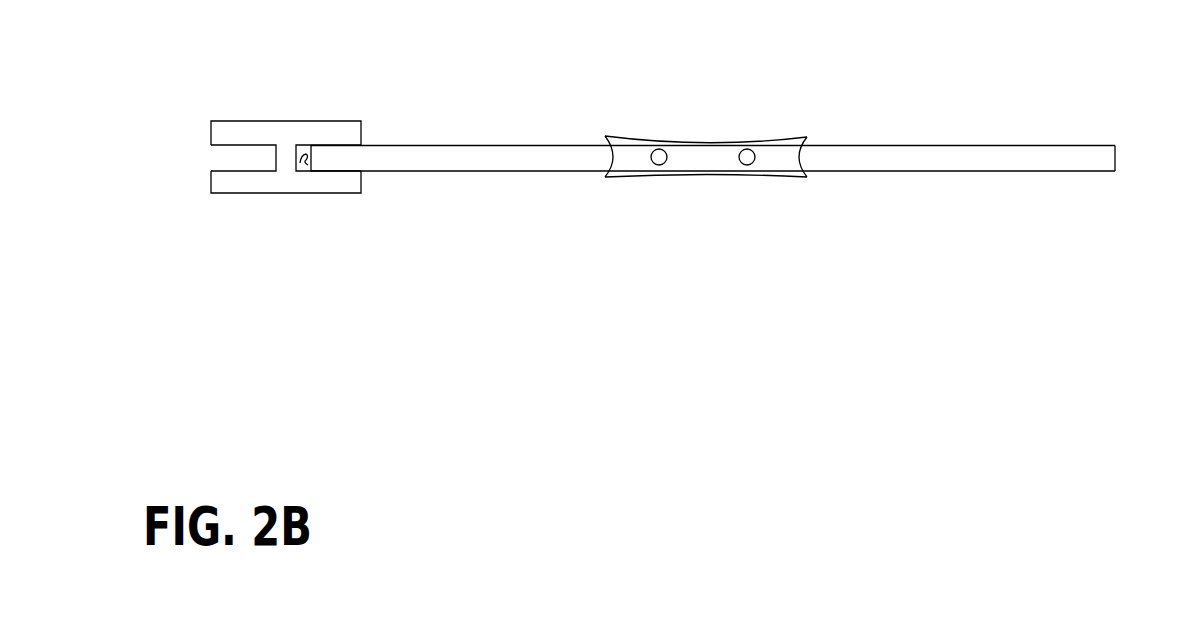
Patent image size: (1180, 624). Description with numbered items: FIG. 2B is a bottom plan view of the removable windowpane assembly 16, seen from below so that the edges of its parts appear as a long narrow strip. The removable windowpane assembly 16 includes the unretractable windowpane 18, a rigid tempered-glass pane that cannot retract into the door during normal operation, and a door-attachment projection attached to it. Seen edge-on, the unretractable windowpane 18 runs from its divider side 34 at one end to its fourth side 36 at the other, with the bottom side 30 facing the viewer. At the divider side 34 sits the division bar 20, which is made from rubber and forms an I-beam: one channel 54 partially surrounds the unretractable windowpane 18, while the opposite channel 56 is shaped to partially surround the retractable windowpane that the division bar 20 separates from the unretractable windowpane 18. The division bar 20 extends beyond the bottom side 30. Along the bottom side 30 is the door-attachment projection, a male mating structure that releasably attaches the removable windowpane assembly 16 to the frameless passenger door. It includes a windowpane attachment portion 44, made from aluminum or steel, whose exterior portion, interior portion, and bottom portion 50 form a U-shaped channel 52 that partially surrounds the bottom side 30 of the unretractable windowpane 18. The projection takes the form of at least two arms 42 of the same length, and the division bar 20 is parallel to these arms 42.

The removable windowpane assembly 16 is at (197, 95).
The unretractable windowpane 18 is at (974, 181).
The division bar 20 is at (277, 120).
The bottom side 30 is at (932, 160).
The divider side 34 is at (303, 150).
The fourth side 36 is at (1115, 155).
The arms 42 is at (747, 165).
The windowpane attachment portion 44 is at (692, 157).
The bottom portion 50 is at (608, 157).
The channel 52 is at (807, 150).
The channel 54 is at (312, 165).
The channel 56 is at (250, 164).